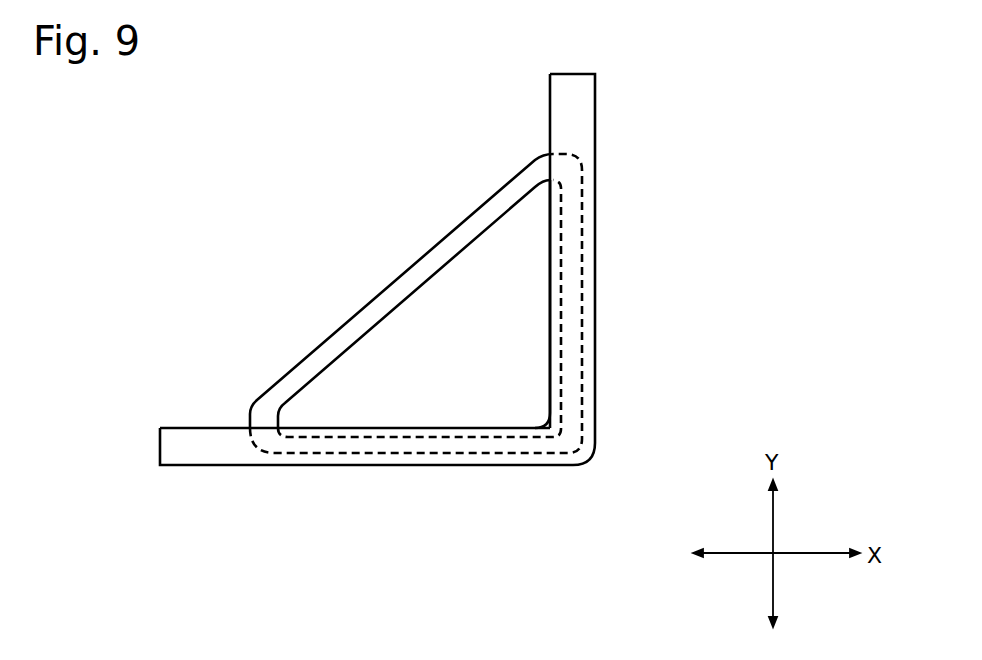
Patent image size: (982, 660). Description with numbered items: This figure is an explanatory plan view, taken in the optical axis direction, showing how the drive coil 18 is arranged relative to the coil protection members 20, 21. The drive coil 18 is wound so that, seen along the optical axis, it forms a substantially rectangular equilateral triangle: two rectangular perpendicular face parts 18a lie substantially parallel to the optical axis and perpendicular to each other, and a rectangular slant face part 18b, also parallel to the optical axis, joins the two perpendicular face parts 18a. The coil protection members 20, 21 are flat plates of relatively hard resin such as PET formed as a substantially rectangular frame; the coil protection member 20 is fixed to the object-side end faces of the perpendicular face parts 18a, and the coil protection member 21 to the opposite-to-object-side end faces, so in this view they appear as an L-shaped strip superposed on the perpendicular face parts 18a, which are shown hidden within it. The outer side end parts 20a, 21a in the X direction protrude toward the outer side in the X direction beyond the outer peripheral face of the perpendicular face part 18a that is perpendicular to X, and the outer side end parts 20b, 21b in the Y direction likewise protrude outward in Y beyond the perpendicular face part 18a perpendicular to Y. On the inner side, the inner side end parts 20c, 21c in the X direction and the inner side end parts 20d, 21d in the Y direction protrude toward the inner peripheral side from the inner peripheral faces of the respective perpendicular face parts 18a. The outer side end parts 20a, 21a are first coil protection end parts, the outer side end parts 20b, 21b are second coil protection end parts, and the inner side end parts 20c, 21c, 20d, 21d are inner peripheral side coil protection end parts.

The drive coil 18 is at (467, 345).
The perpendicular face part 18a is at (467, 345).
The slant face part 18b is at (401, 291).
The coil protection member 20 is at (448, 303).
The coil protection member 21 is at (448, 303).
The outer side end part in the X direction 20a is at (571, 258).
The outer side end part in the X direction 21a is at (571, 258).
The outer side end part in the Y direction 20b is at (377, 451).
The outer side end part in the Y direction 21b is at (377, 451).
The inner side end part in the X direction 20c is at (478, 251).
The inner side end part in the X direction 21c is at (478, 251).
The inner side end part in the Y direction 20d is at (355, 403).
The inner side end part in the Y direction 21d is at (355, 403).